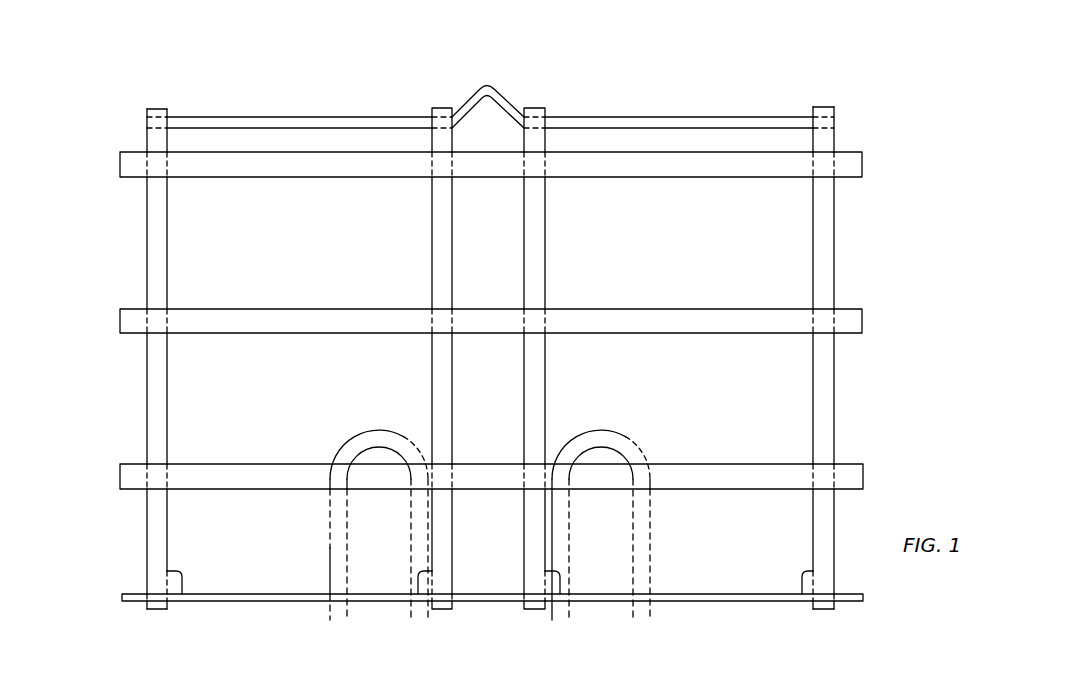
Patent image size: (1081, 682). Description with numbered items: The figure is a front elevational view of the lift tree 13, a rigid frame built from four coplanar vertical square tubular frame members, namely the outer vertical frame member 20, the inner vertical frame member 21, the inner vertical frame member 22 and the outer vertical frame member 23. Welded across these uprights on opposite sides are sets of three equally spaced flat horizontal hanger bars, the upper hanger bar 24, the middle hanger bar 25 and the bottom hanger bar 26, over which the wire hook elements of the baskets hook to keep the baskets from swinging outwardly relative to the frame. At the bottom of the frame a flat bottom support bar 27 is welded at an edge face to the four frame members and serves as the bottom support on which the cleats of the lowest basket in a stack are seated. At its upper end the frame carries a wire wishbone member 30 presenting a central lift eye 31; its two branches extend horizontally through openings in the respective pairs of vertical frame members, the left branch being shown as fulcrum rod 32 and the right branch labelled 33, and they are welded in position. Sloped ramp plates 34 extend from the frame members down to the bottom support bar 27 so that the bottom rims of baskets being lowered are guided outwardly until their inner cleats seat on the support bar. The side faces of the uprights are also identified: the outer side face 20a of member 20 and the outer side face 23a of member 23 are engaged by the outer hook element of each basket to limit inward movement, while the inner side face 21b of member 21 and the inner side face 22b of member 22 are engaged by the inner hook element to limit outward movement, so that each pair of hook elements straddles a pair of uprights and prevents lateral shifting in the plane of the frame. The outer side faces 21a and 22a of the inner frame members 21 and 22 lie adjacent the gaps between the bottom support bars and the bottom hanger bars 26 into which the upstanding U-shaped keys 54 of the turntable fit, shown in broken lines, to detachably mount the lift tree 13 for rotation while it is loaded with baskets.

The lift tree 13 is at (148, 400).
The outer vertical frame member 20 is at (158, 281).
The outer side face 20a is at (147, 251).
The inner vertical frame member 21 is at (436, 259).
The outer side face 21a is at (432, 406).
The inner side face 21b is at (453, 217).
The inner vertical frame member 22 is at (538, 224).
The outer side face 22a is at (547, 373).
The inner side face 22b is at (523, 270).
The outer vertical frame member 23 is at (820, 225).
The outer side face 23a is at (838, 242).
The hanger bar 24 is at (340, 168).
The hanger bar 25 is at (318, 326).
The hanger bar 26 is at (248, 482).
The bottom support bar 27 is at (291, 605).
The wire wishbone member 30 is at (592, 114).
The lift eye 31 is at (504, 97).
The fulcrum rod 32 is at (353, 125).
The right section of top rail 33 is at (770, 118).
The ramp plate 34 is at (544, 580).
The U-shaped key 54 is at (334, 545).